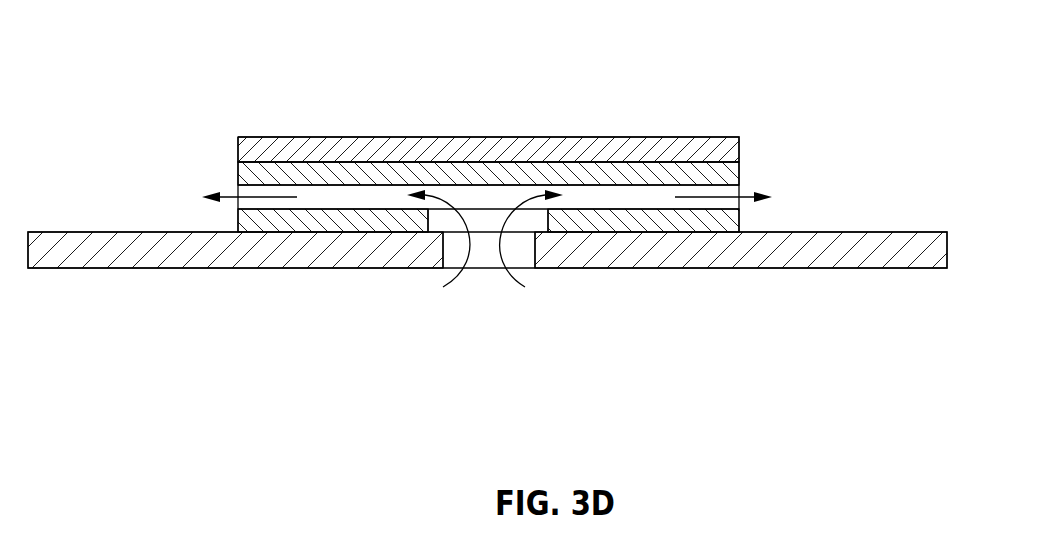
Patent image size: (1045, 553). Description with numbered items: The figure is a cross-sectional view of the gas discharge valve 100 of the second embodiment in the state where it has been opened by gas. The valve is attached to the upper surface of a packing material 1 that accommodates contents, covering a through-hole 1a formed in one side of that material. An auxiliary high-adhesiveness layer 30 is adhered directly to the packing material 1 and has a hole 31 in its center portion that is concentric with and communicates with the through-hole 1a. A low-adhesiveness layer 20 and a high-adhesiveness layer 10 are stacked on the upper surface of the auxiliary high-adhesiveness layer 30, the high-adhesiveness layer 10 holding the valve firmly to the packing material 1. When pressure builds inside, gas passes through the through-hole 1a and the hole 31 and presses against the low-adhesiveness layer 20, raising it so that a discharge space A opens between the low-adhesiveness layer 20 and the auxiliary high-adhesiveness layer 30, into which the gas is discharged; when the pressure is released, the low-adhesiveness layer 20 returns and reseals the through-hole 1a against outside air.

The packing material 1 is at (867, 233).
The through-hole 1a is at (490, 243).
The high-adhesiveness layer 10 is at (330, 150).
The low-adhesiveness layer 20 is at (430, 175).
The auxiliary high-adhesiveness layer 30 is at (640, 222).
The hole 31 is at (481, 222).
The gas discharge valve 100 is at (620, 113).
The discharge space A is at (590, 197).